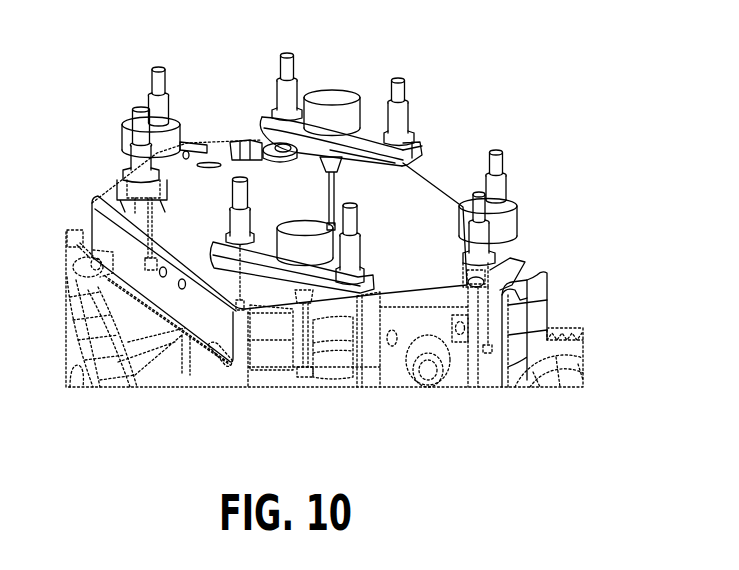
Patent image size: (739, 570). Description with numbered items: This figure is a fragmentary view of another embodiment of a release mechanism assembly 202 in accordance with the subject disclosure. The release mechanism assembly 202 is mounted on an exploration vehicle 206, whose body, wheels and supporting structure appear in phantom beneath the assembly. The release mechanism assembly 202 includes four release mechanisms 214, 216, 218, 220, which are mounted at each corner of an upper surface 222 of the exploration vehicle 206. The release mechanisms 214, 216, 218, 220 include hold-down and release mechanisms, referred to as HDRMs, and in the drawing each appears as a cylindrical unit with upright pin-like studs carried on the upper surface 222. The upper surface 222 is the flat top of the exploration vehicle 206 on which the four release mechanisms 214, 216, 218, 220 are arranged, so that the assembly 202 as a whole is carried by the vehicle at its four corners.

The release mechanism assembly 202 is at (95, 102).
The exploration vehicle 206 is at (537, 271).
The release mechanism 214 is at (326, 98).
The release mechanism 216 is at (507, 205).
The release mechanism 218 is at (254, 262).
The release mechanism 220 is at (168, 122).
The upper surface 222 is at (425, 207).